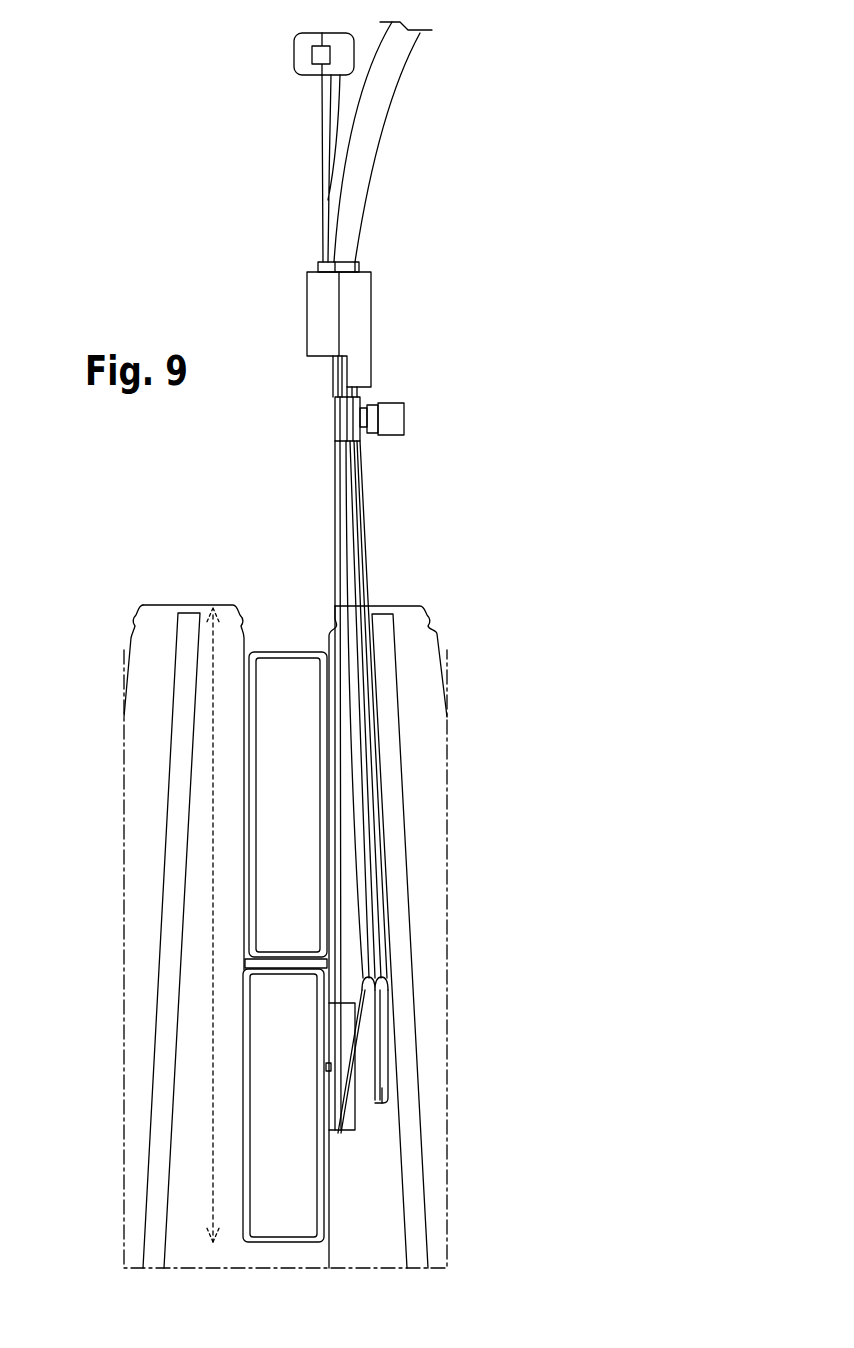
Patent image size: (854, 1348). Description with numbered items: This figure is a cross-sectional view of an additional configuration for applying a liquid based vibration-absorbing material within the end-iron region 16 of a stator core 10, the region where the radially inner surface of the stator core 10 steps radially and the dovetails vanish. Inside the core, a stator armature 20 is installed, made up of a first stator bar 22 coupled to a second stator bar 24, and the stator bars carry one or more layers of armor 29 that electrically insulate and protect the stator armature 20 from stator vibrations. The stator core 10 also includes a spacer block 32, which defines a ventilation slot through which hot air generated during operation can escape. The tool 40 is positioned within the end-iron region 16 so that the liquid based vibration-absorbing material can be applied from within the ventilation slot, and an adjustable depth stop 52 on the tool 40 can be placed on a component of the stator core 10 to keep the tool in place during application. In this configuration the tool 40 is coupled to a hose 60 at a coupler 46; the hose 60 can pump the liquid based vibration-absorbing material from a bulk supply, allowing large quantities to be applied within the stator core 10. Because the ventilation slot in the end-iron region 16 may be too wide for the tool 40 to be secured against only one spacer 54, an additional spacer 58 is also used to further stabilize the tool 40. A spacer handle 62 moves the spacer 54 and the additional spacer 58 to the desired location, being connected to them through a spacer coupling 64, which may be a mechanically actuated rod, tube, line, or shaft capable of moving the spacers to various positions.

The stator core 10 is at (165, 605).
The end-iron region 16 is at (213, 655).
The stator armature 20 is at (245, 963).
The first stator bar 22 is at (293, 865).
The second stator bar 24 is at (282, 1143).
The armor 29 is at (245, 1085).
The spacer block 32 is at (148, 1175).
The tool 40 is at (342, 1020).
The coupler 46 is at (328, 311).
The adjustable depth stop 52 is at (387, 422).
The spacer 54 is at (362, 1058).
The additional spacer 58 is at (388, 1094).
The hose 60 is at (375, 80).
The spacer handle 62 is at (295, 66).
The spacer coupling 64 is at (370, 795).